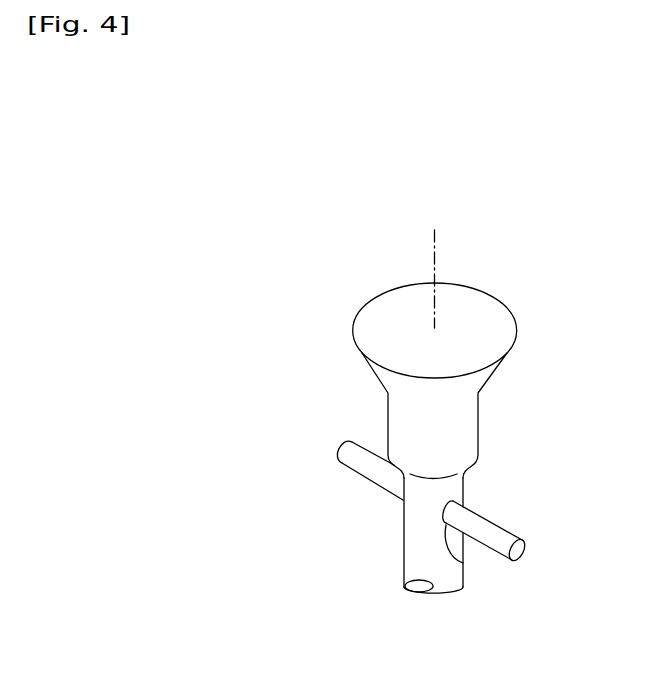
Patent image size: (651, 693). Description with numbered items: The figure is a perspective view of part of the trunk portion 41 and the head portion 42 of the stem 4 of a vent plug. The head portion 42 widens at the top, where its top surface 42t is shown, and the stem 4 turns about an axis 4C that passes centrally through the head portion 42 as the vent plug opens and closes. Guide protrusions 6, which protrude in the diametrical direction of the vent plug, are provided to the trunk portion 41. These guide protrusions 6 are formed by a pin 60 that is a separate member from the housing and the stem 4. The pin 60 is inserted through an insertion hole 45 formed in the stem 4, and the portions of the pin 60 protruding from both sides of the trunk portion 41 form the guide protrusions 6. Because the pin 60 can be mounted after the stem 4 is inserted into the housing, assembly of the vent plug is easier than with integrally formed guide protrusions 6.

The stem 4 is at (388, 422).
The head portion 42 is at (492, 371).
The top end surface of head portion 42t is at (405, 307).
The axis 4C is at (436, 263).
The trunk portion 41 is at (405, 570).
The insertion hole 45 is at (463, 563).
The guide protrusions 6 is at (374, 448).
The pin 60 is at (418, 498).